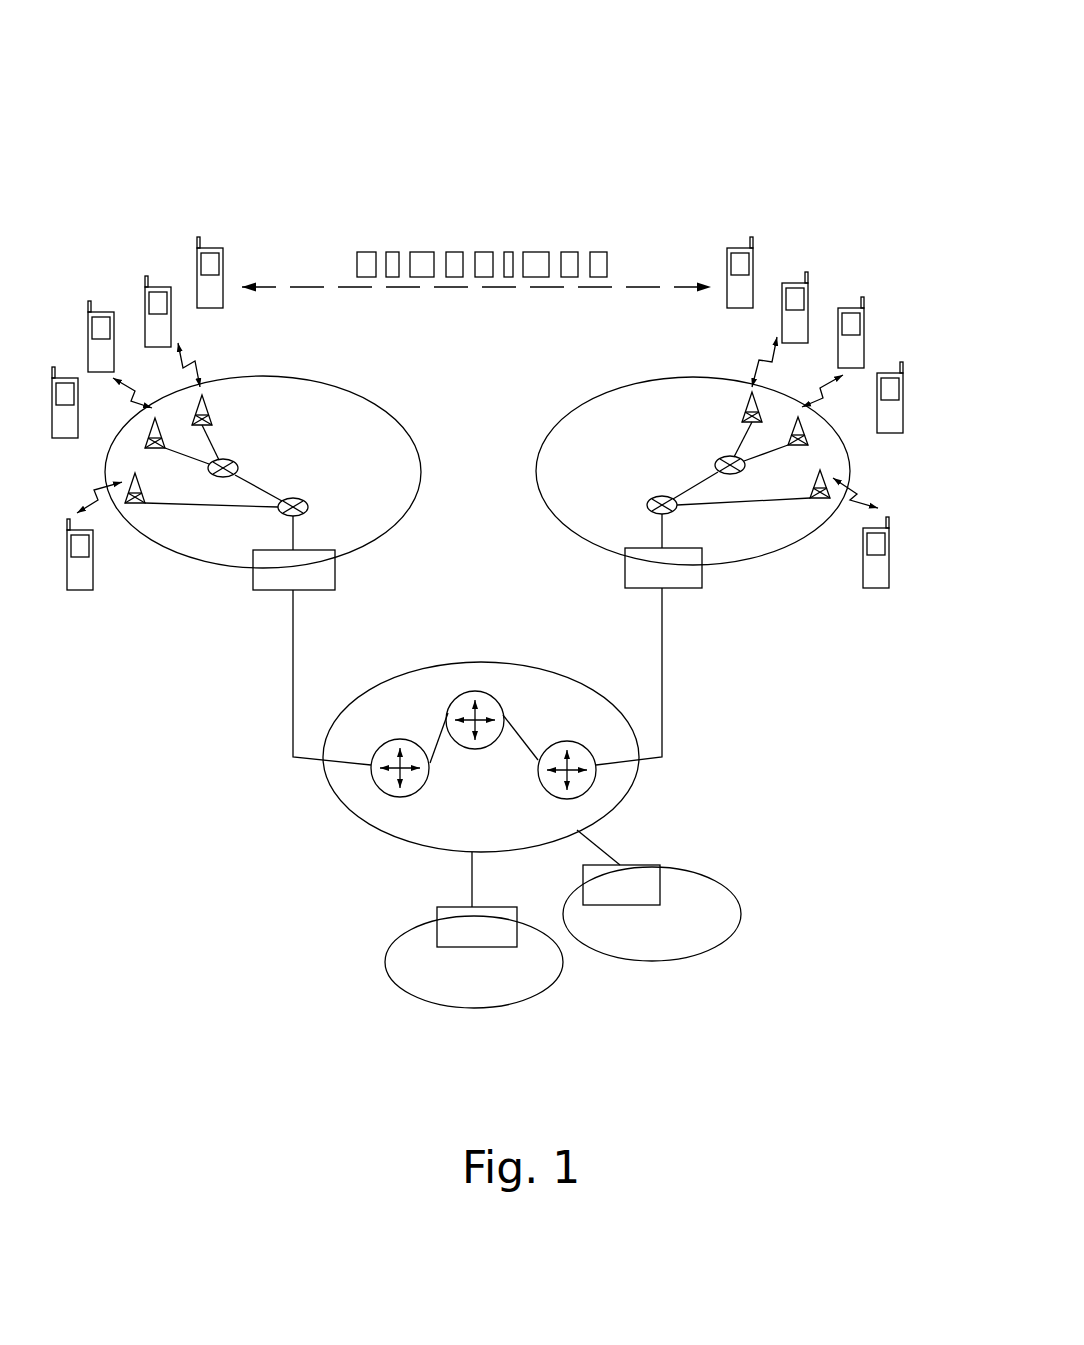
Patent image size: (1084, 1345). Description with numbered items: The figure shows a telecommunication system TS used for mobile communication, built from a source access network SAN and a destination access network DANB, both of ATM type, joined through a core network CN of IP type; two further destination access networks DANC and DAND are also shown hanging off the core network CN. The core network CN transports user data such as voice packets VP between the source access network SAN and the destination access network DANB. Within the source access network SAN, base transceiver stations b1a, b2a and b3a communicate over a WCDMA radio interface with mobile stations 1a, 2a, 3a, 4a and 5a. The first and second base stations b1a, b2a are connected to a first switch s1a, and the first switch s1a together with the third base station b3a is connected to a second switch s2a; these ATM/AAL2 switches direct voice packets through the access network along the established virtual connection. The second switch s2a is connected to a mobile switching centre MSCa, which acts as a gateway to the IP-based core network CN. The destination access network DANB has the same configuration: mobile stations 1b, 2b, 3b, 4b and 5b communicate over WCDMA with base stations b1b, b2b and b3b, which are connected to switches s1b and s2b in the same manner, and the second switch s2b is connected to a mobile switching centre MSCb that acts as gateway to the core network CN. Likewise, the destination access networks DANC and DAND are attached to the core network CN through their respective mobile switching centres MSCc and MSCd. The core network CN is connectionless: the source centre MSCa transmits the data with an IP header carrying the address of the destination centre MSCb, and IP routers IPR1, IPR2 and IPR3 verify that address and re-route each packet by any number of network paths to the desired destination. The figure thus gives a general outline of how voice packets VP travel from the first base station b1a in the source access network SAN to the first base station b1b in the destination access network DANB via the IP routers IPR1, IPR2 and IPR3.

The telecommunication system TS is at (590, 133).
The voice packets VP is at (425, 253).
The mobile station 1a is at (200, 237).
The mobile station 2a is at (147, 276).
The mobile station 3a is at (90, 301).
The mobile station 4a is at (53, 367).
The mobile station 5a is at (90, 590).
The mobile station 1b is at (751, 237).
The mobile station 2b is at (806, 272).
The mobile station 3b is at (862, 297).
The mobile station 4b is at (901, 362).
The mobile station 5b is at (868, 588).
The source access network SAN is at (293, 377).
The destination access network DANB is at (620, 377).
The destination access network DANC is at (743, 915).
The destination access network DAND is at (385, 965).
The first base transceiver station b1a is at (213, 415).
The second base transceiver station b2a is at (155, 450).
The third base transceiver station b3a is at (142, 505).
The first switch s1a is at (238, 466).
The second switch s2a is at (305, 500).
The first base station b1b is at (742, 418).
The base station b2b is at (797, 447).
The base station b3b is at (818, 500).
The first switch s1b is at (715, 459).
The second switch s2b is at (655, 500).
The mobile switching centre MSCa is at (294, 570).
The mobile switching centre MSCb is at (663, 568).
The mobile switching centre MSCc is at (621, 885).
The mobile switching centre MSCd is at (477, 927).
The core network CN is at (462, 661).
The IP router IPR1 is at (380, 792).
The IP router IPR2 is at (450, 716).
The IP router IPR3 is at (570, 799).